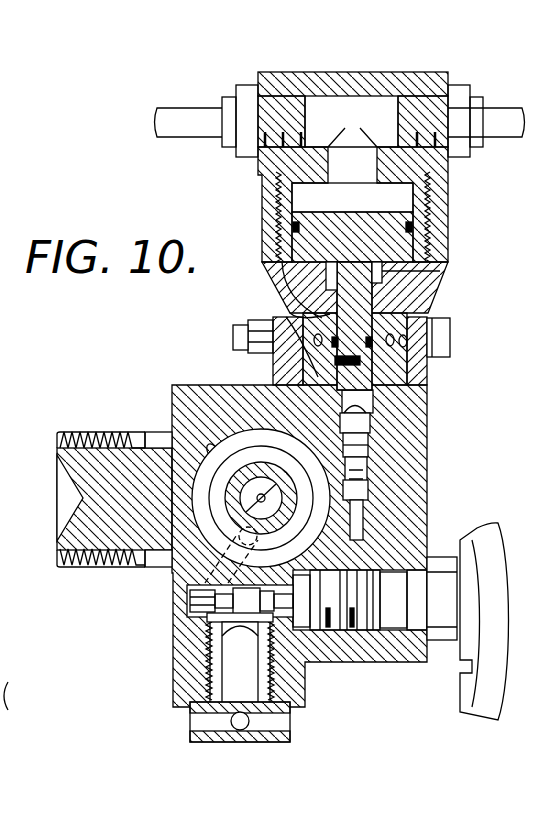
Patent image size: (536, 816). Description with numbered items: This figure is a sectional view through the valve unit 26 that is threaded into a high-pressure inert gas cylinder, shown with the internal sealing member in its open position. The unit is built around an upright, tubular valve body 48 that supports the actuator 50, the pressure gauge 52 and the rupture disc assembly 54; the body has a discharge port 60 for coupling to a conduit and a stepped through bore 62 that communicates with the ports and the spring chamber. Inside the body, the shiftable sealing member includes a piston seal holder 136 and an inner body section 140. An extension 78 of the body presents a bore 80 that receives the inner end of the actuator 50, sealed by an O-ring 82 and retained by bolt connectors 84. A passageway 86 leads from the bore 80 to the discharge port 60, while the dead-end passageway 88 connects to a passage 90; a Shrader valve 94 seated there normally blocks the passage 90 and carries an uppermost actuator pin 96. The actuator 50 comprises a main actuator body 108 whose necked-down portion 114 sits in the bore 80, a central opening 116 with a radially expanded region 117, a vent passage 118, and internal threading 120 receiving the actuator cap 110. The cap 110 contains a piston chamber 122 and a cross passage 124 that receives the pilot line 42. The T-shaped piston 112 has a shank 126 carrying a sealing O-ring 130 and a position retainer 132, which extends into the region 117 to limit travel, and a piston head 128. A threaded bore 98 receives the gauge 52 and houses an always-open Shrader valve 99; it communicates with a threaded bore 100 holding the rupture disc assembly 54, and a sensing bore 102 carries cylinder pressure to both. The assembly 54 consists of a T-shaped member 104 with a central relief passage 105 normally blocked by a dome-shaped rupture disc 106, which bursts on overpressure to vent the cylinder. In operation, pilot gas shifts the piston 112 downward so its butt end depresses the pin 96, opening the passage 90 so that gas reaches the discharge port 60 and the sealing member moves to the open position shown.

The valve unit 26 is at (150, 355).
The pilot line 42 is at (182, 113).
The valve body 48 is at (190, 392).
The actuator 50 is at (397, 60).
The pressure gauge 52 is at (472, 712).
The rupture disc assembly 54 is at (250, 756).
The discharge port 60 is at (78, 432).
The stepped through bore 62 is at (170, 432).
The extension 78 is at (447, 325).
The bore 80 is at (415, 340).
The O-ring 82 is at (425, 365).
The bolt connectors 84 is at (236, 334).
The passageway 86 is at (282, 388).
The passageway 88 is at (366, 460).
The passage 90 is at (380, 500).
The Shrader valve 94 is at (368, 478).
The actuator pin 96 is at (380, 440).
The threaded bore 98 is at (357, 632).
The Shrader valve 99 is at (215, 612).
The threaded bore 100 is at (210, 665).
The sensing bore 102 is at (230, 565).
The T-shaped member 104 is at (205, 742).
The relief passage 105 is at (265, 722).
The rupture disc 106 is at (210, 632).
The main actuator body 108 is at (447, 265).
The actuator cap 110 is at (433, 80).
The piston 112 is at (420, 230).
The necked-down portion 114 is at (415, 388).
The central opening 116 is at (297, 300).
The radially expanded region 117 is at (372, 415).
The vent passage 118 is at (395, 272).
The internal threading 120 is at (433, 190).
The piston chamber 122 is at (298, 197).
The cross passage 124 is at (333, 107).
The shank 126 is at (283, 268).
The piston head 128 is at (295, 221).
The sealing O-ring 130 is at (400, 306).
The position retainer 132 is at (280, 311).
The piston seal holder 136 is at (247, 505).
The inner body section 140 is at (232, 488).